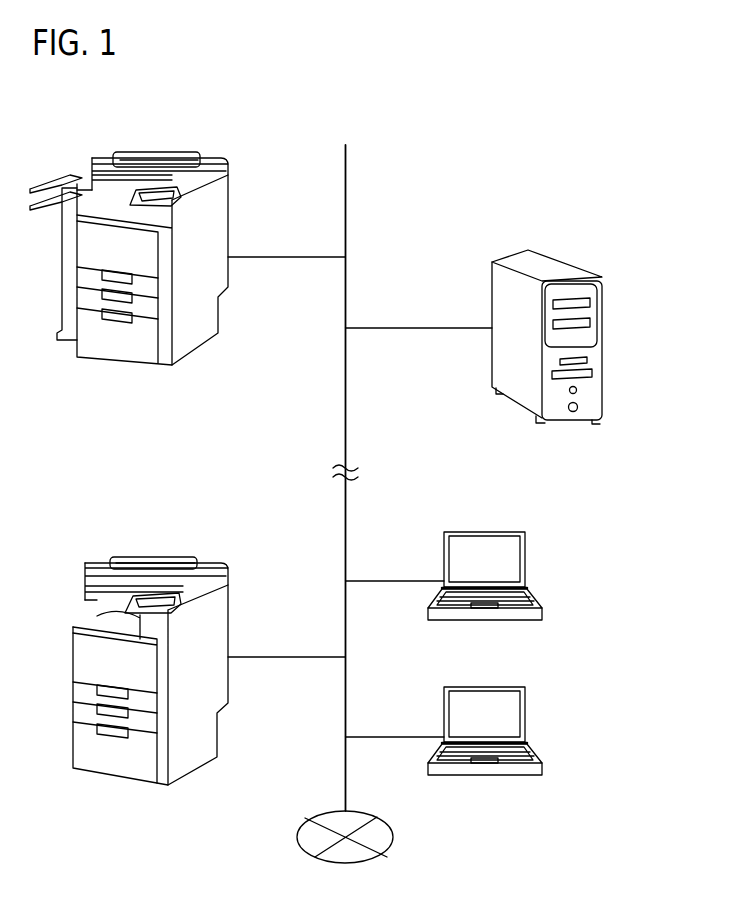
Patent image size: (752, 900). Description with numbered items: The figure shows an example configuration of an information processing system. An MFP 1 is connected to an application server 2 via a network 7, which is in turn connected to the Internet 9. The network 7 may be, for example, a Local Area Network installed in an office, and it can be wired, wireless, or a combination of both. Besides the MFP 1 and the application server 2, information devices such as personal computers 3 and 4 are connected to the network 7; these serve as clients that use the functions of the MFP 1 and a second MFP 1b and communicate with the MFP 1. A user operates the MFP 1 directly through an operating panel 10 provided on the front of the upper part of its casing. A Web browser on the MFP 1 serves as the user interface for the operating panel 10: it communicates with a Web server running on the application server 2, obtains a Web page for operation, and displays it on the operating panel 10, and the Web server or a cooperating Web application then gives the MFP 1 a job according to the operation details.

The MFP 1 is at (170, 232).
The MFP 1b is at (194, 556).
The application server 2 is at (548, 258).
The personal computer 3 is at (525, 552).
The personal computer 4 is at (525, 712).
The network 7 is at (347, 418).
The Internet 9 is at (387, 840).
The operating panel 10 is at (183, 190).